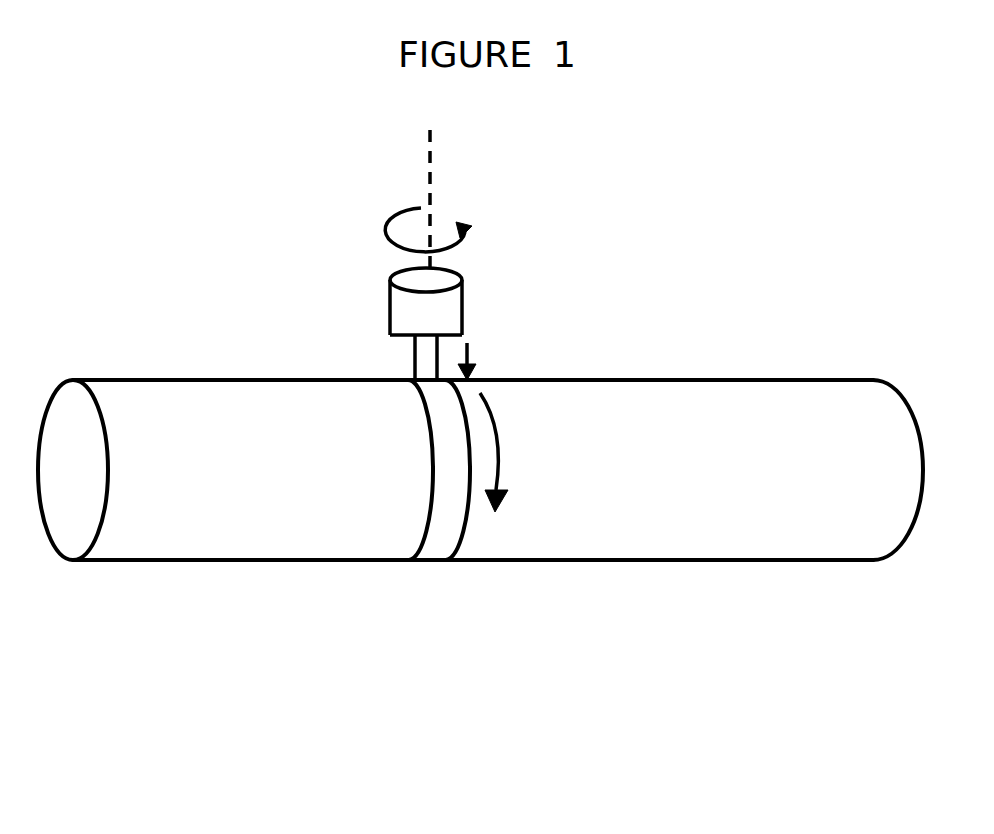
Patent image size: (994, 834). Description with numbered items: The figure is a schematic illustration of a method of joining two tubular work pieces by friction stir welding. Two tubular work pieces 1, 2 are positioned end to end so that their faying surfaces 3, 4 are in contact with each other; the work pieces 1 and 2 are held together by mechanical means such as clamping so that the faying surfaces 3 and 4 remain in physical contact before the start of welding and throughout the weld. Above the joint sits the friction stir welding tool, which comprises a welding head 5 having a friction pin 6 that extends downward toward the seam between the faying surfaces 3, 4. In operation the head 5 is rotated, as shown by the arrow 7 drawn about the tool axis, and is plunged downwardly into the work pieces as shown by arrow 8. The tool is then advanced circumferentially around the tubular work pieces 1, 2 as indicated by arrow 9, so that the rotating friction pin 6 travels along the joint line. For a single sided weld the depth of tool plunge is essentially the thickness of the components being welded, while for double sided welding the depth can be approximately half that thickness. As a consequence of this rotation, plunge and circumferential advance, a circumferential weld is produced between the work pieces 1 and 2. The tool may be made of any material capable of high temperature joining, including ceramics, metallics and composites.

The tubular work piece 1 is at (783, 512).
The tubular work piece 2 is at (193, 515).
The faying surface 3 is at (432, 467).
The faying surface 4 is at (456, 535).
The welding head 5 is at (452, 300).
The friction pin 6 is at (423, 362).
The arrow 7 is at (407, 210).
The arrow 8 is at (470, 350).
The arrow 9 is at (498, 452).